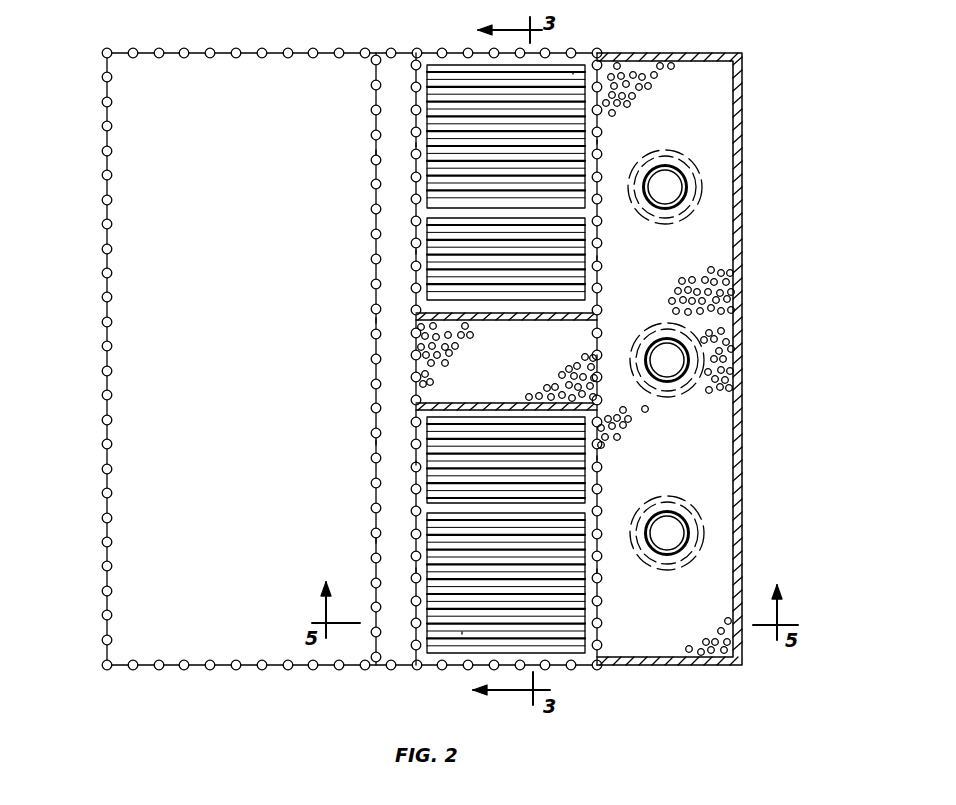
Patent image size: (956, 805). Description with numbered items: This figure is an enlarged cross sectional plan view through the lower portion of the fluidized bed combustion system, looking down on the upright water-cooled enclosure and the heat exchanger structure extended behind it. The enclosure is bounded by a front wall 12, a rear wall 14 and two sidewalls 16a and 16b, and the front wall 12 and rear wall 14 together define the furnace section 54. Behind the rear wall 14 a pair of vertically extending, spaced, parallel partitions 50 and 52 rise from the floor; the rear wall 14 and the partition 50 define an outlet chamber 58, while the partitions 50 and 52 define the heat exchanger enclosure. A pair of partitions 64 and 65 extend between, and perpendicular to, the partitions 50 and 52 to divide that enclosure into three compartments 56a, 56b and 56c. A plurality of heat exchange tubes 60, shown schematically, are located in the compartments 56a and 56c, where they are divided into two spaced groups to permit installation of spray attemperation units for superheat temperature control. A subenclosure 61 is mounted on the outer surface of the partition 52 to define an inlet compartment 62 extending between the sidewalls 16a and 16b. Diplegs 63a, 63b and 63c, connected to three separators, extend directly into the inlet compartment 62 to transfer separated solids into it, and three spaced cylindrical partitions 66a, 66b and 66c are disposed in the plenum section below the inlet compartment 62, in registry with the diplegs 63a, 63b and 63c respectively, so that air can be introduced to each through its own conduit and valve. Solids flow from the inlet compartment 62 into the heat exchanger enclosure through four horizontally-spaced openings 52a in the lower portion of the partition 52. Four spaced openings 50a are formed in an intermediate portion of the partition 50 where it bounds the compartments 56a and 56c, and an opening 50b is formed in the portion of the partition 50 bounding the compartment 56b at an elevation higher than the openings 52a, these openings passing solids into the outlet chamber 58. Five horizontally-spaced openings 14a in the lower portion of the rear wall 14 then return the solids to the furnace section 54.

The front wall 12 is at (107, 258).
The rear wall 14 is at (366, 193).
The openings 14a is at (376, 152).
The sidewall 16a is at (290, 668).
The sidewall 16b is at (223, 56).
The partition 50 is at (406, 70).
The openings 50a is at (414, 145).
The opening 50b is at (418, 347).
The partition 52 is at (608, 170).
The openings 52a is at (598, 142).
The furnace section 54 is at (236, 282).
The heat exchanger compartment 56a is at (462, 634).
The heat exchanger compartment 56b is at (519, 363).
The heat exchanger compartment 56c is at (573, 72).
The outlet chamber 58 is at (411, 501).
The heat exchange tubes 60 is at (459, 87).
The subenclosure 61 is at (742, 132).
The inlet compartment 62 is at (720, 238).
The dip leg 63a is at (678, 556).
The dipleg 63b is at (700, 338).
The dipleg 63c is at (676, 210).
The partition 64 is at (440, 402).
The partition 65 is at (537, 322).
The cylindrical partition 66a is at (704, 533).
The cylindrical partition 66b is at (690, 392).
The cylindrical partition 66c is at (703, 187).